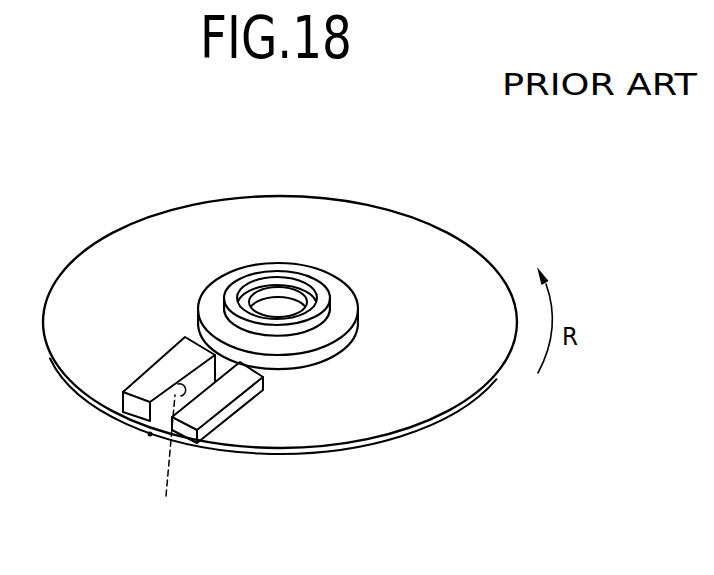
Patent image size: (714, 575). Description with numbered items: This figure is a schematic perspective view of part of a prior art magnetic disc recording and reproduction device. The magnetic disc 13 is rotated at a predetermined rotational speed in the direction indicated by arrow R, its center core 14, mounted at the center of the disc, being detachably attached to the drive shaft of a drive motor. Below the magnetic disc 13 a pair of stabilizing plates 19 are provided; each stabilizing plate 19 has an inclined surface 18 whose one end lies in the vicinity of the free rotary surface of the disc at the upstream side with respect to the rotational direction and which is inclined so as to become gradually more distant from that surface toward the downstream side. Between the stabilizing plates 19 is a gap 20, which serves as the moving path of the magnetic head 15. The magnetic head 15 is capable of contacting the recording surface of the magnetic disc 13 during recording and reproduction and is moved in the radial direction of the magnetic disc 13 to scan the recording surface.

The magnetic disc 13 is at (348, 223).
The hub 14 is at (327, 300).
The magnetic head 15 is at (169, 456).
The inclined surface 18 is at (180, 368).
The stabilizing plate 19 is at (130, 406).
The gap 20 is at (145, 436).